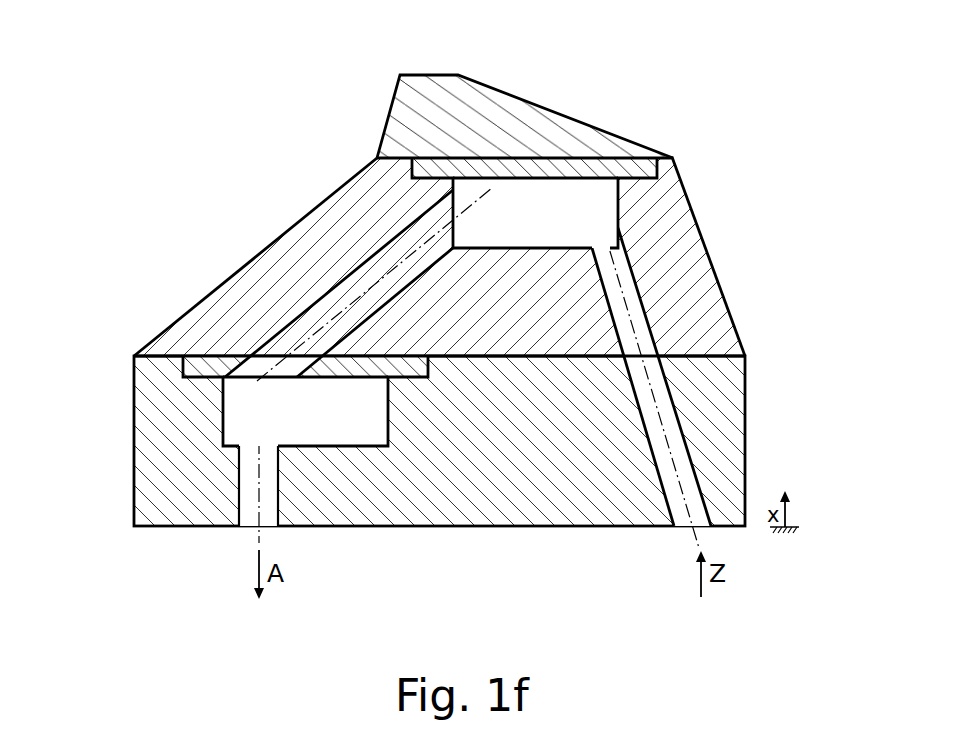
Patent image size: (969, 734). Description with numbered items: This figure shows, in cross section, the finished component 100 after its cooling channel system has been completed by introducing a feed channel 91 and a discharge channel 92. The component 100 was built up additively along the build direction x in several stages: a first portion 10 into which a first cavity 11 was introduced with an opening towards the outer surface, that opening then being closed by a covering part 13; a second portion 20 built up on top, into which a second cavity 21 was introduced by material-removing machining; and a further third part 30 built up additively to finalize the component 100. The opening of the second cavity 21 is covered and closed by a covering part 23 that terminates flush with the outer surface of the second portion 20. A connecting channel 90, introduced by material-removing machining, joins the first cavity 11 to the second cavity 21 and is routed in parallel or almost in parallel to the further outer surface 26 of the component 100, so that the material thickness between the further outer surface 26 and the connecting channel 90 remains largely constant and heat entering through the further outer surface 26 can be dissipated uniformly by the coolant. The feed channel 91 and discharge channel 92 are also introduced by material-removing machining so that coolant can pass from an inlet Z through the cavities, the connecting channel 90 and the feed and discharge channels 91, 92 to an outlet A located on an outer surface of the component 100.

The component 100 is at (451, 316).
The first portion 10 is at (733, 423).
The first cavity 11 is at (243, 422).
The covering part 13 is at (213, 363).
The second portion 20 is at (483, 256).
The second cavity 21 is at (585, 207).
The covering part 23 is at (455, 170).
The further outer surface 26 is at (253, 255).
The third part 30 is at (568, 123).
The connecting channel 90 is at (402, 250).
The feed channel 91 is at (685, 518).
The discharge channel 92 is at (250, 515).